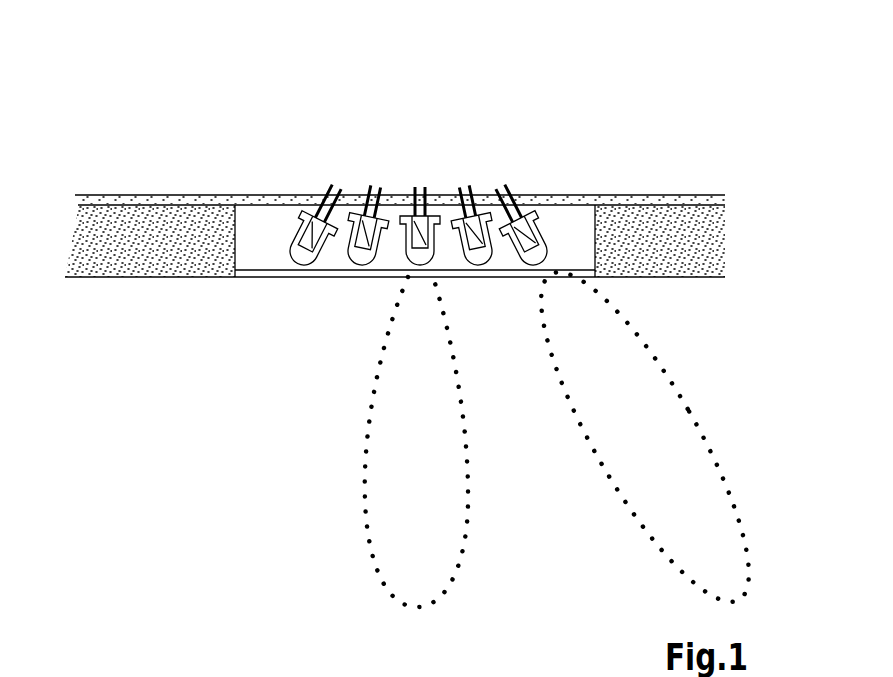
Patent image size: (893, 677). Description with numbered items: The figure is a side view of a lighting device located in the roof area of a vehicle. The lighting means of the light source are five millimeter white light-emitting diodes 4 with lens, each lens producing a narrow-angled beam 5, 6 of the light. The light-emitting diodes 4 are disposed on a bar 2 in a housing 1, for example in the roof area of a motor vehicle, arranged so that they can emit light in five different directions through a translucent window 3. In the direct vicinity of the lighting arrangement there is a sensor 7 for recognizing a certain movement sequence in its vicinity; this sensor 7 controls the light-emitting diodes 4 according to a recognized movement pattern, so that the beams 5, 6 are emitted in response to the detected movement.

The housing 1 is at (188, 263).
The bar 2 is at (213, 197).
The translucent window 3 is at (273, 273).
The white light-emitting diode 4 is at (291, 250).
The narrow-angled beam 5 is at (394, 380).
The narrow-angled beam 6 is at (687, 438).
The sensor 7 is at (447, 214).